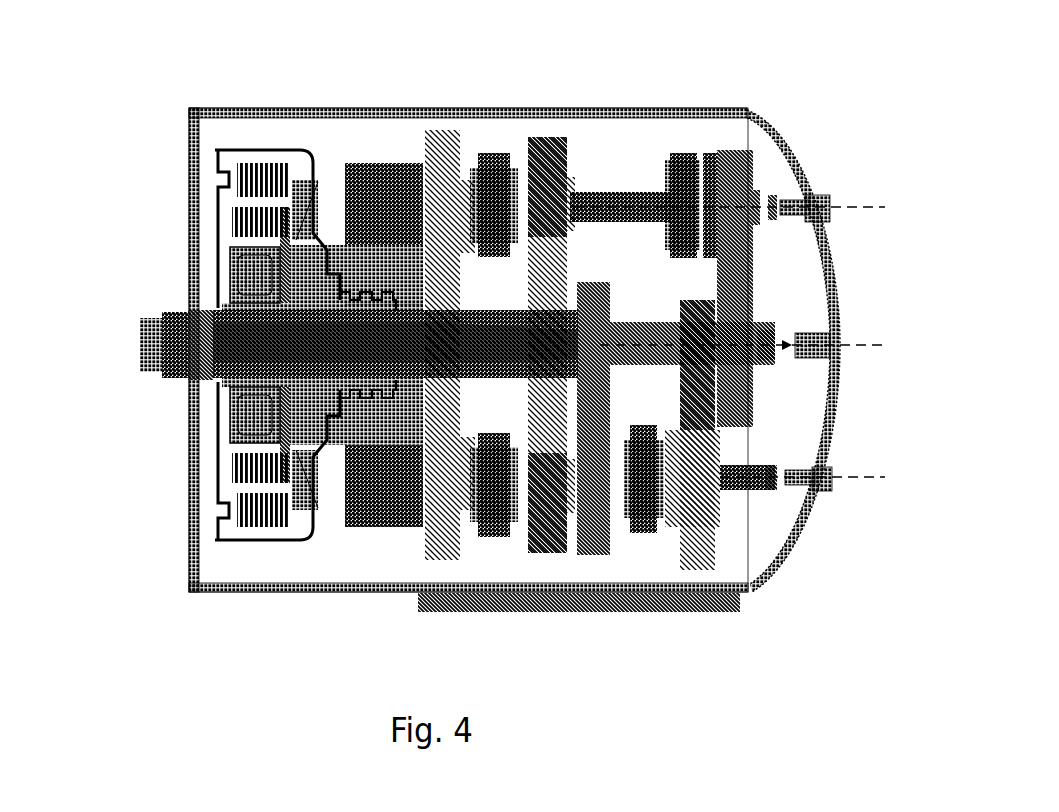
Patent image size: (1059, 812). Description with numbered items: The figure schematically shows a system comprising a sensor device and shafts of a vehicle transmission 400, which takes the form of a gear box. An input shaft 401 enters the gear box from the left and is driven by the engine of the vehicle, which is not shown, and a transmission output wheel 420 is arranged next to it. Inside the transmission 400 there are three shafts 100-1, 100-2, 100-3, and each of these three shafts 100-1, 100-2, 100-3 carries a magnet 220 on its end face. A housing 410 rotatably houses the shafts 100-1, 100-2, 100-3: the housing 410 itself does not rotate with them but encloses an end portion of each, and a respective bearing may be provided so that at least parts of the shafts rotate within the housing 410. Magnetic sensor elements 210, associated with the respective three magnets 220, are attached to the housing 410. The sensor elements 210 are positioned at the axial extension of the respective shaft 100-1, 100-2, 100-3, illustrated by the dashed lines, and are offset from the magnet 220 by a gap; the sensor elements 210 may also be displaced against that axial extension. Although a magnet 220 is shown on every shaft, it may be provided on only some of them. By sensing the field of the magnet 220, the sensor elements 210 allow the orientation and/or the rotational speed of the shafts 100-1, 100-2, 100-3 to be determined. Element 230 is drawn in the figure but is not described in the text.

The transmission 400 is at (114, 52).
The housing 410 is at (297, 112).
The transmission output wheel 420 is at (370, 273).
The input shaft 401 is at (118, 347).
The shaft 100-1 is at (608, 188).
The shaft 100-2 is at (686, 320).
The shaft 100-3 is at (755, 488).
The magnetic sensor element 210 is at (823, 387).
The magnet 220 is at (880, 537).
The mounting plate 230 is at (583, 610).